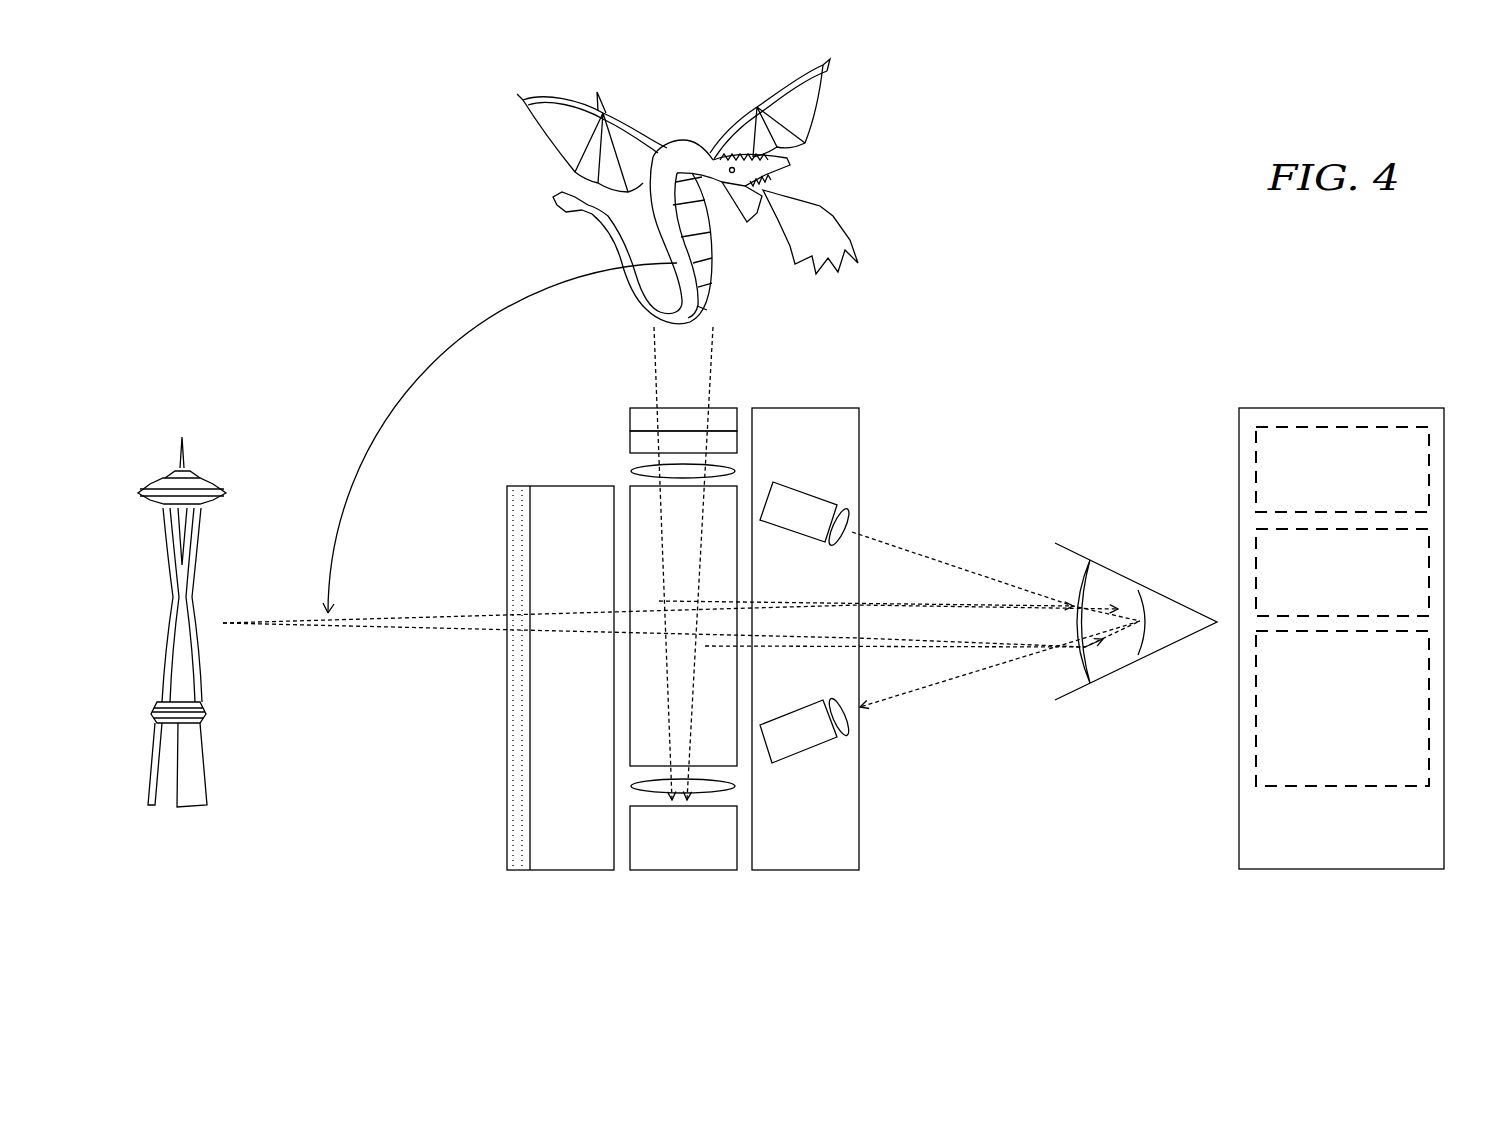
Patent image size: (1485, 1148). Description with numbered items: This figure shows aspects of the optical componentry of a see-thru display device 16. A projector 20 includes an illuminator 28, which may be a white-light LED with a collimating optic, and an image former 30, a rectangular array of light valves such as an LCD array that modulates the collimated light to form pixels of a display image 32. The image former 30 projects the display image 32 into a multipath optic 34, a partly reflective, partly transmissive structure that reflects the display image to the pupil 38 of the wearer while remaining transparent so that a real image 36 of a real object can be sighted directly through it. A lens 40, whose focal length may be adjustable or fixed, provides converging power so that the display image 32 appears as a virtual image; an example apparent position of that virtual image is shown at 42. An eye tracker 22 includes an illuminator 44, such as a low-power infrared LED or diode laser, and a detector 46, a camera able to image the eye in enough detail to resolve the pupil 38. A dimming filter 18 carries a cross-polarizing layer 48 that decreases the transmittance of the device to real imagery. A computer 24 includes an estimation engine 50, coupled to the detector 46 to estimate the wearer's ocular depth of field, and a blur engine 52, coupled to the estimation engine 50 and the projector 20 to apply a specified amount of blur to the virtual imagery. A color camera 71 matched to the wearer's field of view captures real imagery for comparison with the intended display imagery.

The see-thru display device 16 is at (410, 334).
The dimming filter 18 is at (536, 705).
The projector 20 is at (838, 598).
The eye tracker 22 is at (946, 639).
The computer 24 is at (1341, 638).
The illuminator 28 is at (630, 412).
The image former 30 is at (630, 441).
The display image 32 is at (727, 130).
The multipath optic 34 is at (683, 626).
The real image 36 is at (218, 597).
The pupil 38 is at (1073, 597).
The lens 40 is at (630, 468).
The apparent position of virtual display image 42 is at (670, 629).
The illuminator 44 is at (950, 551).
The detector 46 is at (950, 692).
The cross-polarizing layer 48 is at (531, 696).
The estimation engine 50 is at (1342, 469).
The blur engine 52 is at (1342, 572).
The color camera 71 is at (683, 838).